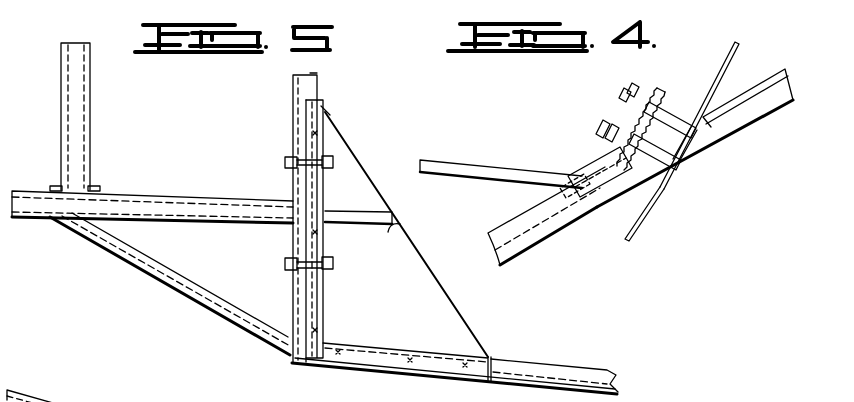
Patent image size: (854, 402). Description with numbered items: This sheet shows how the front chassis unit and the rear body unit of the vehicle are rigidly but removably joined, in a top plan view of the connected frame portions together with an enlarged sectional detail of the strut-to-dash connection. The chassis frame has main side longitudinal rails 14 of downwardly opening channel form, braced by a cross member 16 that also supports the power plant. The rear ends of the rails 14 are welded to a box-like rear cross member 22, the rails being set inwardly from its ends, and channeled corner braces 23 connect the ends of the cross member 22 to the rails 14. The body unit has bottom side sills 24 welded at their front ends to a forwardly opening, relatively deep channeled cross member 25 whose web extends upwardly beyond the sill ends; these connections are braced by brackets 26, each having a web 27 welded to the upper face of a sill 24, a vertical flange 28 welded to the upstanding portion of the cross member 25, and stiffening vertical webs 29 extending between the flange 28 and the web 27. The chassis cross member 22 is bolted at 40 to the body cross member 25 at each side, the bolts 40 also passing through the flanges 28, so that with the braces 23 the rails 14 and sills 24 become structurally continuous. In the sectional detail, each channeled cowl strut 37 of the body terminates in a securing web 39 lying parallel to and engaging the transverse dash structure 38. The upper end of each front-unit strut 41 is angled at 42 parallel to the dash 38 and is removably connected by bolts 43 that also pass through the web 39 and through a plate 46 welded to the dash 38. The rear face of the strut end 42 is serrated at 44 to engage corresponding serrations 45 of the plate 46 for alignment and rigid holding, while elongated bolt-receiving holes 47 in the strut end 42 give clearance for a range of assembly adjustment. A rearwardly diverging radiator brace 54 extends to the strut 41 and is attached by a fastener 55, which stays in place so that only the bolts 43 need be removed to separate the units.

In FIG. 5, the main side longitudinal rail 14 is at (153, 200).
In FIG. 5, the cross member 16 is at (89, 125).
In FIG. 5, the rear cross member 22 is at (293, 98).
In FIG. 5, the channeled corner brace 23 is at (190, 289).
In FIG. 5, the bottom side sill 24 is at (537, 335).
In FIG. 5, the channeled cross member 25 is at (326, 110).
In FIG. 5, the bracket 26 is at (423, 250).
In FIG. 5, the bracket web 27 is at (397, 230).
In FIG. 5, the vertical flange 28 is at (324, 305).
In FIG. 5, the vertical web 29 is at (370, 214).
In FIG. 5, the bolt 40 is at (333, 162).
In FIG. 4, the cowl strut 37 is at (751, 88).
In FIG. 4, the dash structure 38 is at (722, 53).
In FIG. 4, the securing web 39 is at (668, 183).
In FIG. 4, the strut 41 is at (540, 240).
In FIG. 4, the angled strut end 42 is at (656, 92).
In FIG. 4, the bolt 43 is at (694, 143).
In FIG. 4, the serrations 44 is at (607, 150).
In FIG. 4, the serrations 45 is at (647, 178).
In FIG. 4, the plate 46 is at (694, 110).
In FIG. 4, the elongated bolt-receiving hole 47 is at (645, 93).
In FIG. 4, the brace 54 is at (508, 150).
In FIG. 4, the fastener 55 is at (588, 165).